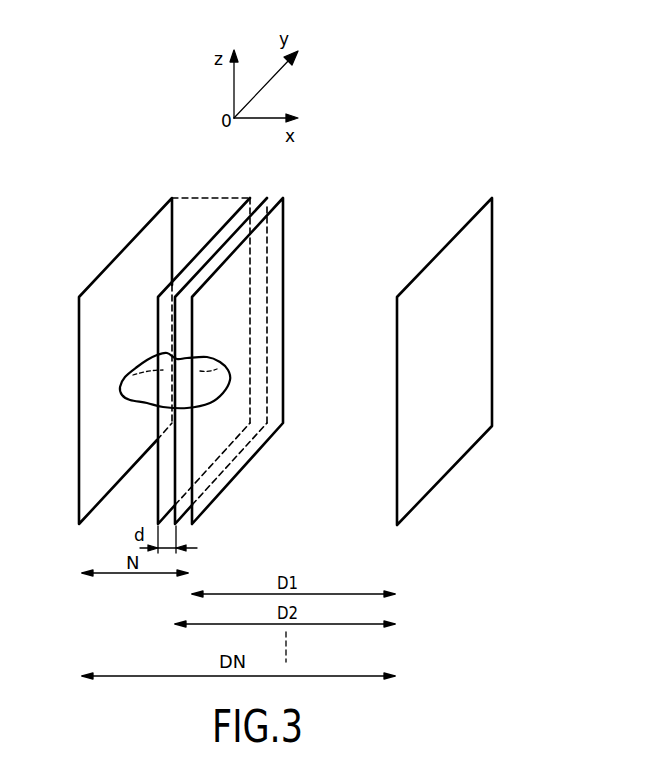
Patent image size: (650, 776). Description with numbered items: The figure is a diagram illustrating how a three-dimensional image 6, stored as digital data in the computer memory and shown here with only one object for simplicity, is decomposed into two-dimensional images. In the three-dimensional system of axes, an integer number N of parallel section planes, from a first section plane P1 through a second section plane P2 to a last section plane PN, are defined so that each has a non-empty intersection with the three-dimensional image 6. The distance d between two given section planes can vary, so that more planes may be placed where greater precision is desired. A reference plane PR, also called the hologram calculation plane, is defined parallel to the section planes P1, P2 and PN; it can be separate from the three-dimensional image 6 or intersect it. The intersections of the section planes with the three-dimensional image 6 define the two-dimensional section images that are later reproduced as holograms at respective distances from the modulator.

The three-dimensional image 6 is at (202, 370).
The section plane PN is at (80, 371).
The section plane P1 is at (283, 222).
The section plane P2 is at (265, 208).
The reference plane PR is at (455, 258).